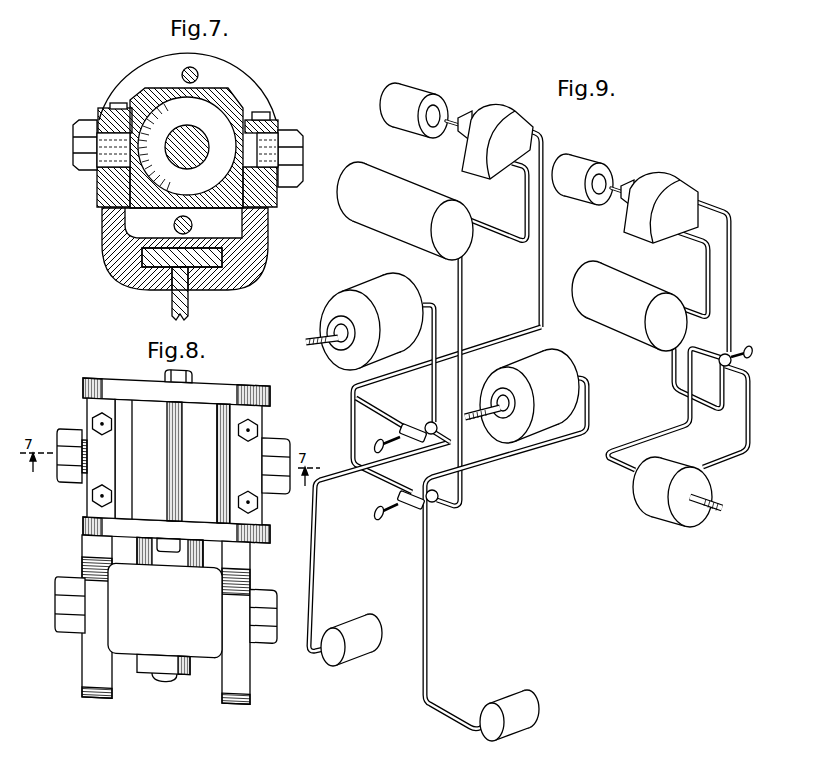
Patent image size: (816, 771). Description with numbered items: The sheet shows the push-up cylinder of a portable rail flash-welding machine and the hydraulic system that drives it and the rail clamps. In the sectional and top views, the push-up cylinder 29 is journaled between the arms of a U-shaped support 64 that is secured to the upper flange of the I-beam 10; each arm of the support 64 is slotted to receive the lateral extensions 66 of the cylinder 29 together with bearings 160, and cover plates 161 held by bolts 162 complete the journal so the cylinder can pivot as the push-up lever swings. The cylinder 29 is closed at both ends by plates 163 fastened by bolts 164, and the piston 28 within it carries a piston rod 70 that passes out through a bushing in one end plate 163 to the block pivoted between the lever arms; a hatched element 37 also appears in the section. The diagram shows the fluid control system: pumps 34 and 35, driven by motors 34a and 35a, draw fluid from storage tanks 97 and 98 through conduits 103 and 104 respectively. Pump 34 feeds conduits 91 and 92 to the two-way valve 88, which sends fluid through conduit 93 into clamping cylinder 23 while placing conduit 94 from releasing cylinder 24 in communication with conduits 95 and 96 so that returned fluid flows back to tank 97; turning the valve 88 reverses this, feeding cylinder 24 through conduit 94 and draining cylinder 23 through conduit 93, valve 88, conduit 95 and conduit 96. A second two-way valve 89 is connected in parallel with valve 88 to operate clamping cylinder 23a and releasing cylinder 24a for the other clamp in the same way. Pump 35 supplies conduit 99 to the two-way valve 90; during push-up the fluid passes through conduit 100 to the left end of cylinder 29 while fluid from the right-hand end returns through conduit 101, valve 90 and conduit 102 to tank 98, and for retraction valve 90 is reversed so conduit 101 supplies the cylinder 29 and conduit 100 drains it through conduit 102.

In FIG. 7, the end plate 163 is at (147, 75).
In FIG. 7, the bolt 164 is at (182, 74).
In FIG. 7, the push-up cylinder 29 is at (222, 95).
In FIG. 9, the push-up cylinder 29 is at (648, 507).
In FIG. 7, the piston rod 70 is at (197, 139).
In FIG. 7, the piston 28 is at (189, 187).
In FIG. 7, the U-shaped support 64 is at (102, 244).
In FIG. 7, the insert key 37 is at (221, 263).
In FIG. 7, the I-beam 10 is at (188, 303).
In FIG. 7, the cover plate 161 is at (105, 113).
In FIG. 7, the bolt 162 is at (113, 103).
In FIG. 7, the bearing 160 is at (270, 128).
In FIG. 7, the lateral extension 66 is at (270, 145).
In FIG. 9, the motor 34a is at (421, 88).
In FIG. 9, the pump 34 is at (500, 112).
In FIG. 9, the motor 35a is at (589, 157).
In FIG. 9, the pump 35 is at (669, 183).
In FIG. 9, the storage tank 97 is at (399, 180).
In FIG. 9, the storage tank 98 is at (636, 283).
In FIG. 9, the conduit 103 is at (508, 240).
In FIG. 9, the conduit 104 is at (707, 276).
In FIG. 9, the conduit 99 is at (733, 268).
In FIG. 9, the clamping cylinder 23 is at (401, 288).
In FIG. 9, the clamping cylinder 23a is at (567, 365).
In FIG. 9, the conduit 93 is at (433, 332).
In FIG. 9, the conduit 91 is at (491, 340).
In FIG. 9, the conduit 96 is at (458, 371).
In FIG. 9, the two-way valve 88 is at (422, 422).
In FIG. 9, the conduit 92 is at (381, 410).
In FIG. 9, the conduit 95 is at (435, 438).
In FIG. 9, the conduit 94 is at (343, 476).
In FIG. 9, the two-way valve 89 is at (410, 510).
In FIG. 9, the releasing cylinder 24 is at (359, 651).
In FIG. 9, the releasing cylinder 24a is at (522, 723).
In FIG. 9, the two-way valve 90 is at (731, 355).
In FIG. 9, the conduit 102 is at (670, 366).
In FIG. 9, the conduit 100 is at (641, 436).
In FIG. 9, the conduit 101 is at (748, 413).